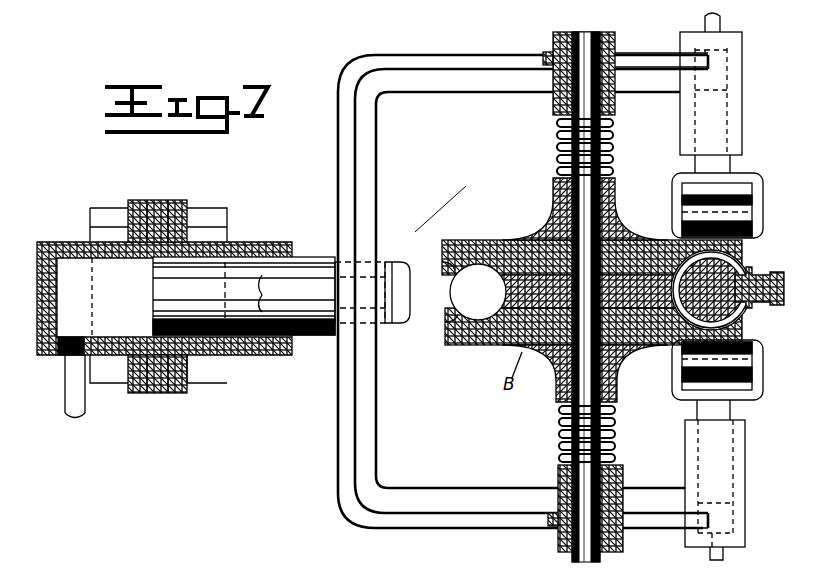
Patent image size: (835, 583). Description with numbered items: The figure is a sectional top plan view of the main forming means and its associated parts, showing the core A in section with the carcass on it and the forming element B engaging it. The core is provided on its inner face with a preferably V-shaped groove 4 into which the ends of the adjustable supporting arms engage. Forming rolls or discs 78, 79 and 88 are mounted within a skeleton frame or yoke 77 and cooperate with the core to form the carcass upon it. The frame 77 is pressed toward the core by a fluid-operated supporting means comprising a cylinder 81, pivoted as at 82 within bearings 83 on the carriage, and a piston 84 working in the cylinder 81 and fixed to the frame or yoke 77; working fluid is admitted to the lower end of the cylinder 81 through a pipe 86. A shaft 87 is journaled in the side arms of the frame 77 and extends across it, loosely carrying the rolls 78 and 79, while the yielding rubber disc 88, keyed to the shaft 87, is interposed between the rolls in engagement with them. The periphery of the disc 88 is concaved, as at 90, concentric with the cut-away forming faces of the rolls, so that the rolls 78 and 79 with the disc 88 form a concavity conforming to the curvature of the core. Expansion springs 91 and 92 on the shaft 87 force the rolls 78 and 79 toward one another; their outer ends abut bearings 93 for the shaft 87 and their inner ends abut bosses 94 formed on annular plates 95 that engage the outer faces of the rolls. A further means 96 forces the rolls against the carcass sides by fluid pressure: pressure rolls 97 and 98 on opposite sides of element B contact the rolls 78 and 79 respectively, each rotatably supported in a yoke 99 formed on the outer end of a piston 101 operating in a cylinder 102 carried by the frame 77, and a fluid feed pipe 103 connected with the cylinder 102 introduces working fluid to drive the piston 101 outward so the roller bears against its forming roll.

The V-shaped groove 4 is at (780, 274).
The skeleton frame or yoke 77 is at (470, 497).
The forming roll 78 is at (490, 348).
The forming roll 79 is at (486, 240).
The cylinder 81 is at (274, 352).
The pivot 82 is at (168, 392).
The bearings 83 is at (220, 388).
The piston 84 is at (318, 350).
The pipe 86 is at (67, 416).
The shaft 87 is at (503, 236).
The disc or forming roll 88 is at (500, 292).
The concavity 90 is at (478, 318).
The expansion spring 91 is at (612, 150).
The expansion spring 92 is at (610, 446).
The bearings 93 is at (618, 105).
The bosses 94 is at (618, 196).
The annular plates 95 is at (527, 226).
The fluid-pressure roll-forcing means 96 is at (760, 396).
The pressure roll 97 is at (752, 342).
The pressure roll 98 is at (745, 178).
The yoke 99 is at (745, 400).
The piston 101 is at (697, 408).
The cylinder 102 is at (690, 458).
The fluid feed pipe 103 is at (725, 553).